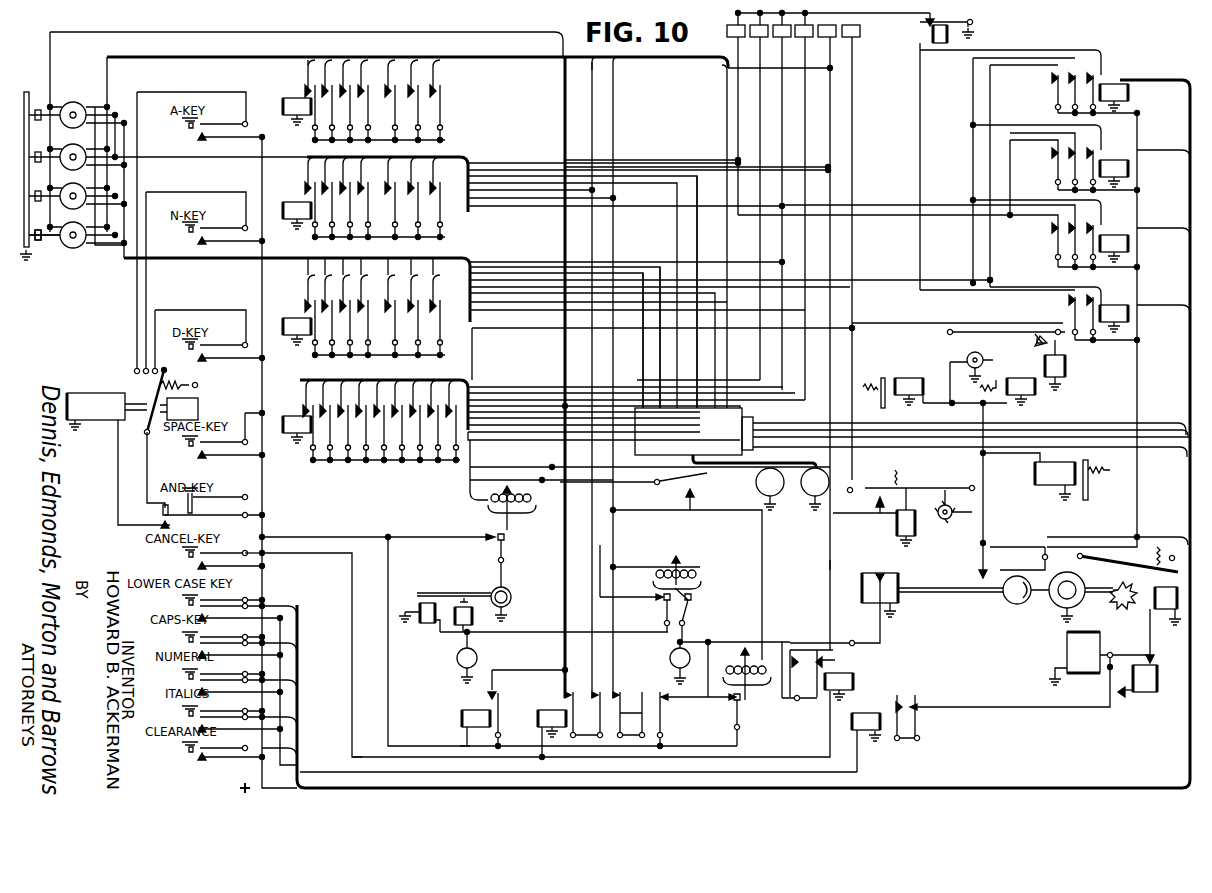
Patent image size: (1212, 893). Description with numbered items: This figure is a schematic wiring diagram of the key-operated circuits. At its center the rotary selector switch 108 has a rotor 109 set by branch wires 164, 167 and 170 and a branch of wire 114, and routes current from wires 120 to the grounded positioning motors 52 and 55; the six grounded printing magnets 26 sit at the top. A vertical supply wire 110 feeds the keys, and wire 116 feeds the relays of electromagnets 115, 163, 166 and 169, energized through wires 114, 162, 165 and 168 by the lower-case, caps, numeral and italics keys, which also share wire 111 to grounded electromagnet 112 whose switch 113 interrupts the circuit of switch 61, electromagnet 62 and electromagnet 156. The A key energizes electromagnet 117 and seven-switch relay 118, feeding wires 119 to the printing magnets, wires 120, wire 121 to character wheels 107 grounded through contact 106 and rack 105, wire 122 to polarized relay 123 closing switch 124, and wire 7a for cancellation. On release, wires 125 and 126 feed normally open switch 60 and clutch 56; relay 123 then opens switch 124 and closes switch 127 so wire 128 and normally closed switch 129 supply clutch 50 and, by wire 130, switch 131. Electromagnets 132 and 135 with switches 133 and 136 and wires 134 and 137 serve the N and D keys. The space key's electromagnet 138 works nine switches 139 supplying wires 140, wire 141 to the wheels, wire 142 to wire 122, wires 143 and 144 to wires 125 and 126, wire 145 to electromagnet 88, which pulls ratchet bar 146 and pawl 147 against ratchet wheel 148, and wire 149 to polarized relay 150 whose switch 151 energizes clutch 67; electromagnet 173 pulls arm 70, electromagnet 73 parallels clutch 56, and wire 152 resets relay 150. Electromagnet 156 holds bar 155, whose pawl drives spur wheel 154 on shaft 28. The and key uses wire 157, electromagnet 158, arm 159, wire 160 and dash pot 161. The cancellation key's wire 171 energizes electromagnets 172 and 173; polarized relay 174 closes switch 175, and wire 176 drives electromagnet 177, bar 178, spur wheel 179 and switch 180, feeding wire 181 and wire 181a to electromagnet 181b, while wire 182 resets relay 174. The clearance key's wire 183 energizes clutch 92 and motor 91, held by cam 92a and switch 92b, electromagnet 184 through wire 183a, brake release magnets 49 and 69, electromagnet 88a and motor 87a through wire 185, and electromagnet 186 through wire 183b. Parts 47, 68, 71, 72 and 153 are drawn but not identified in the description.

The commonly connected wire 7a is at (594, 75).
The printing magnets 26 is at (727, 39).
The shaft 28 is at (1105, 600).
The plunger 47 is at (1090, 490).
The brake release magnet 49 is at (1045, 485).
The clutch 50 is at (670, 656).
The positioning motor 52 is at (805, 495).
The positioning motor 55 is at (757, 486).
The electrically operated clutch 56 is at (477, 657).
The normally open switch 60 is at (668, 477).
The switch 61 is at (863, 636).
The electromagnet 62 is at (1062, 653).
The electromagnetic clutch 67 is at (507, 593).
The solenoid plunger 68 is at (885, 402).
The brake release magnet 69 is at (903, 378).
The arm 70 is at (465, 593).
The contact 71 is at (469, 607).
The relay 72 is at (472, 625).
The electromagnet 73 is at (422, 626).
The motor 87a is at (975, 389).
The electromagnet 88 is at (1068, 361).
The electromagnet 88a is at (1026, 400).
The motor 91 is at (883, 566).
The clutch 92 is at (1063, 608).
The cam 92a is at (1018, 605).
The switch 92b is at (991, 564).
The rack 105 is at (30, 262).
The contact 106 is at (45, 240).
The character wheels 107 is at (76, 102).
The rotary selector switch 108 is at (648, 456).
The rotor 109 is at (756, 416).
The current supply wire 110 is at (260, 172).
The wire 111 is at (318, 758).
The electromagnet 112 is at (870, 710).
The switch 113 is at (914, 718).
The wire 114 is at (291, 611).
The electromagnet 115 is at (1127, 96).
The wire 116 is at (285, 786).
The electromagnet 117 is at (290, 92).
The seven-switch relay 118 is at (452, 140).
The pair of wires 119 is at (785, 72).
The wires 120 is at (727, 112).
The wire 121 is at (178, 62).
The wire 122 is at (623, 116).
The polarized relay 123 is at (658, 560).
The switch 124 is at (661, 600).
The wire 125 is at (542, 114).
The wire 126 is at (581, 463).
The switch 127 is at (690, 598).
The wire 128 is at (347, 537).
The normally closed switch 129 is at (664, 712).
The wire 130 is at (726, 642).
The switch 131 is at (803, 643).
The electromagnet 132 is at (290, 197).
The switches 133 is at (452, 240).
The pair of wires 134 is at (700, 158).
The electromagnet 135 is at (290, 315).
The switches 136 is at (304, 372).
The pair of wires 137 is at (308, 272).
The electromagnet 138 is at (290, 402).
The switches 139 is at (364, 470).
The wires 140 is at (749, 380).
The wire 141 is at (397, 32).
The wire 142 is at (580, 420).
The wire 143 is at (515, 483).
The wire 144 is at (515, 466).
The wire 145 is at (473, 349).
The ratchet bar 146 is at (1033, 326).
The pawl 147 is at (1035, 362).
The ratchet wheel 148 is at (970, 357).
The wire 149 is at (470, 492).
The polarized relay 150 is at (514, 528).
The switch 151 is at (478, 544).
The connecting wire 152 is at (653, 505).
The conductor 153 is at (528, 432).
The spur wheel 154 is at (1125, 600).
The pivoted bar 155 is at (1134, 558).
The electromagnet 156 is at (1171, 614).
The wire 157 is at (112, 476).
The electromagnet 158 is at (90, 393).
The insulated arm 159 is at (155, 385).
The wire 160 is at (148, 456).
The dash pot 161 is at (198, 410).
The wire 162 is at (291, 635).
The electromagnet 163 is at (1130, 181).
The branch wire 164 is at (1080, 431).
The wire 165 is at (291, 659).
The electromagnet 166 is at (1137, 245).
The branch wire 167 is at (1120, 430).
The wire 168 is at (291, 696).
The electromagnet 169 is at (1137, 318).
The branch wire 170 is at (1168, 430).
The wire 171 is at (310, 555).
The electromagnet 172 is at (565, 708).
The electromagnet 173 is at (845, 673).
The polarized relay 174 is at (758, 684).
The switch 175 is at (725, 700).
The wire 176 is at (830, 565).
The ratchet operating electromagnet 177 is at (885, 526).
The bar 178 is at (904, 488).
The spur wheel 179 is at (942, 522).
The switch 180 is at (875, 505).
The wire 181 is at (854, 348).
The wire 181a is at (923, 144).
The electromagnet 181b is at (932, 38).
The connecting wire 182 is at (762, 518).
The wire 183 is at (291, 734).
The branch wire 183a is at (1165, 668).
The branch wire 183b is at (460, 743).
The electromagnet 184 is at (1143, 692).
The connecting wire 185 is at (988, 521).
The electromagnet 186 is at (489, 708).